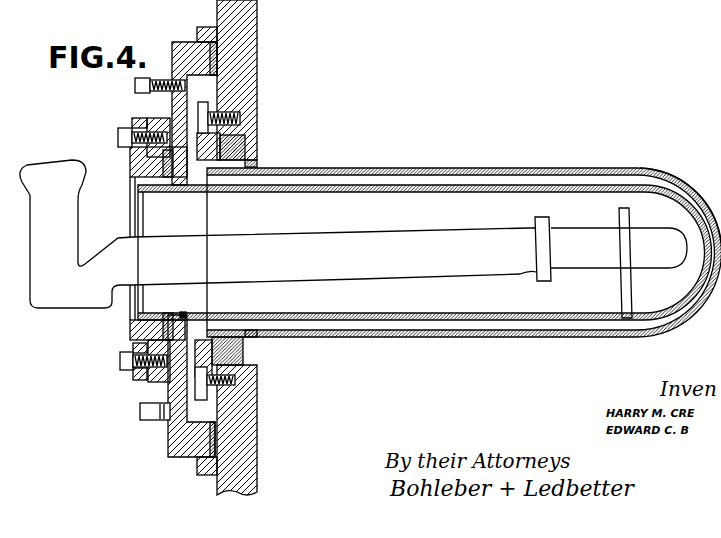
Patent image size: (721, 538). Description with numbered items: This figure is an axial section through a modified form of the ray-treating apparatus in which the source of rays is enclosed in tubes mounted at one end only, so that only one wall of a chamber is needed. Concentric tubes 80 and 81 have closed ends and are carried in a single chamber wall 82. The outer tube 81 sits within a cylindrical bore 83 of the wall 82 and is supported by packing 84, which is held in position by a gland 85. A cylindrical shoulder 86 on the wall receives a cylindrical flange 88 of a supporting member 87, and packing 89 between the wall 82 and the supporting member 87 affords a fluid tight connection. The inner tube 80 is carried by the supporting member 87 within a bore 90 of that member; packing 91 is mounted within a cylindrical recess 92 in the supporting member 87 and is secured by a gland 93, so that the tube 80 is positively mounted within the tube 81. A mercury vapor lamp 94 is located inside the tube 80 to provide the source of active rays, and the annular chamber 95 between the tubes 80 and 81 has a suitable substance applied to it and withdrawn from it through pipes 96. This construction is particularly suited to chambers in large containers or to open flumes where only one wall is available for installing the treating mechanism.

The inner tube 80 is at (360, 190).
The outer tube 81 is at (453, 173).
The chamber wall 82 is at (243, 92).
The cylindrical bore 83 is at (251, 165).
The packing 84 is at (235, 147).
The gland 85 is at (208, 143).
The cylindrical shoulder 86 is at (200, 30).
The supporting member 87 is at (168, 104).
The cylindrical flange 88 is at (193, 42).
The packing 89 is at (212, 52).
The bore 90 is at (185, 313).
The packing 91 is at (165, 170).
The cylindrical recess 92 is at (167, 380).
The gland 93 is at (133, 335).
The mercury vapor lamp 94 is at (472, 243).
The chamber 95 is at (625, 183).
The pipes 96 is at (152, 420).